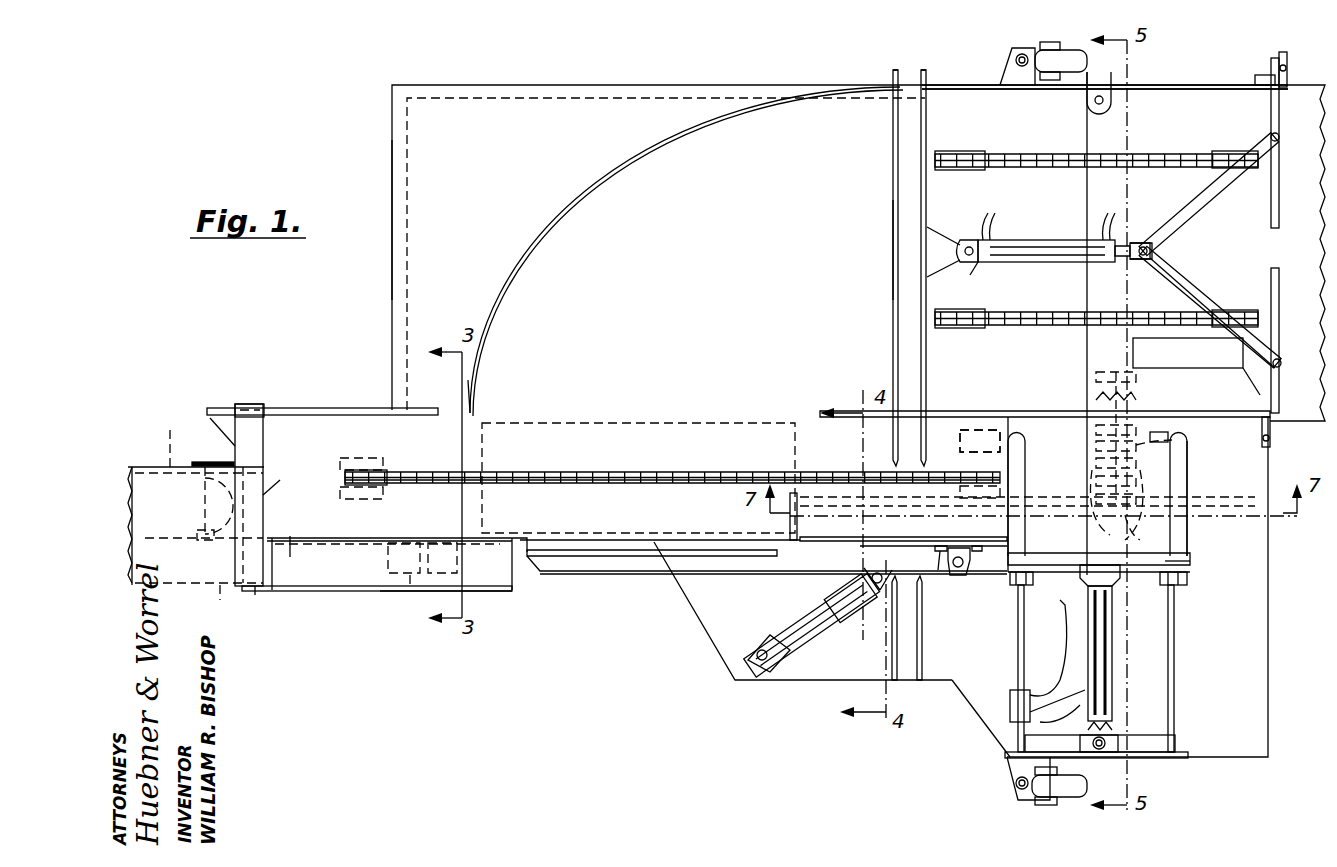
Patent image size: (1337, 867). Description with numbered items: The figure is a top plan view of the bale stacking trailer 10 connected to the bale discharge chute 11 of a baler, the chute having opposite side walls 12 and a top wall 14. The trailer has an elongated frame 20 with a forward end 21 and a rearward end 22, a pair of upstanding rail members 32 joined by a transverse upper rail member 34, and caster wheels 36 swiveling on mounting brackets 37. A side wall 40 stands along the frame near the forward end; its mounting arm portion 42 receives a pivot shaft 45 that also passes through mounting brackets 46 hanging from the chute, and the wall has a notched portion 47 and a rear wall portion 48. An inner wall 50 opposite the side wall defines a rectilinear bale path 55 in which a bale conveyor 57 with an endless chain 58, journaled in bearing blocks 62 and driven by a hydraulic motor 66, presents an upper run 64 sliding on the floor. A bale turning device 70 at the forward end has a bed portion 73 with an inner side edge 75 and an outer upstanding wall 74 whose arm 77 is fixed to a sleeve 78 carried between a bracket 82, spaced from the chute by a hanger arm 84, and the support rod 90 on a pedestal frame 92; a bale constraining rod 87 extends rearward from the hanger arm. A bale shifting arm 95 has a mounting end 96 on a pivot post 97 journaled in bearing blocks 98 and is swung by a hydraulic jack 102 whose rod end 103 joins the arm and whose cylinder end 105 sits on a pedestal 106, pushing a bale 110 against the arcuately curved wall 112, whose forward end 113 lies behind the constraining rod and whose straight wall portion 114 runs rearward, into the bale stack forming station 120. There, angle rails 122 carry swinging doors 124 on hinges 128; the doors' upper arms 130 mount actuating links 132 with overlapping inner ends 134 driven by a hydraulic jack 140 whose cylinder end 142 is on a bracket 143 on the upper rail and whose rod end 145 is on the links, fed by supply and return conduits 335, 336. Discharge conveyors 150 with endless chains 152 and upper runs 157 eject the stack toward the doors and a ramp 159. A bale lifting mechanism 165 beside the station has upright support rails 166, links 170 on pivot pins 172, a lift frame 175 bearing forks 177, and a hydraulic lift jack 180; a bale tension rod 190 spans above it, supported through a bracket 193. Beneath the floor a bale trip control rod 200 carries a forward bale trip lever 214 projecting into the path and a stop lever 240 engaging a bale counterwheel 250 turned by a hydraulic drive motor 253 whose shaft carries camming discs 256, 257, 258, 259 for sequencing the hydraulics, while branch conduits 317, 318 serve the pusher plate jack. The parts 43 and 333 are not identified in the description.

The bale stacking trailer 10 is at (788, 82).
The elongated frame 20 is at (678, 82).
The forward end 21 is at (392, 265).
The bale constraining rod 87 is at (320, 410).
The bracket 82 is at (248, 404).
The arcuately curved wall 112 is at (555, 226).
The forward end of curved wall 113 is at (478, 402).
The top wall 14 is at (180, 522).
The bale discharge chute 11 is at (150, 467).
The side walls 12 is at (212, 600).
The hanger arm 84 is at (264, 440).
The brace 43 is at (220, 462).
The mounting brackets 46 is at (222, 502).
The pivot shaft 45 is at (200, 488).
The mounting arm portion 42 is at (237, 548).
The sleeve 78 is at (264, 490).
The bearing blocks 62 is at (340, 462).
The bed portion 73 is at (299, 530).
The inner side edge 75 is at (320, 538).
The pedestal frame 92 is at (388, 548).
The side wall 40 is at (358, 540).
The outer upstanding wall 74 is at (318, 591).
The forwardly extended arm 77 is at (257, 595).
The bale turning device 70 is at (360, 594).
The support rod 90 is at (408, 589).
The bale conveyor 57 is at (550, 469).
The endless chain 58 is at (700, 472).
The rectilinear bale path 55 is at (672, 446).
The bale 110 is at (600, 423).
The upper run 64 is at (605, 484).
The forward bale trip lever 214 is at (792, 493).
The bale shifting arm 95 is at (627, 560).
The notched portion 47 is at (527, 556).
The rear wall portion 48 is at (830, 548).
The pedestal 106 is at (725, 662).
The hydraulic jack 102 is at (805, 625).
The cylinder end 105 is at (772, 655).
The rod end 103 is at (878, 590).
The inner wall 50 is at (856, 410).
The upstanding rail members 32 is at (903, 70).
The upper rail member 34 is at (893, 255).
The straight wall portion 114 is at (1158, 85).
The ramp 159 is at (1325, 189).
The swinging doors 124 is at (1280, 270).
The upper arms 130 is at (1280, 138).
The overlapping inner ends 134 is at (1163, 240).
The actuating links 132 is at (1220, 290).
The hydraulic door closing jack 140 is at (1035, 240).
The bracket 143 is at (938, 240).
The rod end 145 is at (1125, 262).
The cylinder end 142 is at (982, 264).
The bale stack forming station 120 is at (1010, 228).
The supply conduit 335 is at (1020, 240).
The return conduit 336 is at (1110, 215).
The bale stack ejecting discharge conveyors 150 is at (978, 154).
The upper runs 157 is at (935, 160).
The endless chain 152 is at (1175, 154).
The bale tension rod 190 is at (1150, 385).
The plate 333 is at (1249, 387).
The mounting brackets 37 is at (1010, 75).
The caster wheels 36 is at (1082, 50).
The angle rails 122 is at (1262, 75).
The hinges 128 is at (1288, 68).
The hydraulic drive motor 253 is at (1094, 378).
The camming disc 259 is at (1094, 404).
The hydraulic motor 66 is at (985, 430).
The camming disc 256 is at (1092, 488).
The camming disc 257 is at (1155, 468).
The camming disc 258 is at (1180, 438).
The forks 177 is at (1025, 442).
The bale trip control rod 200 is at (1118, 500).
The bale counterwheel 250 is at (1148, 531).
The stop lever 240 is at (1187, 533).
The lift frame 175 is at (1180, 562).
The bale lifting mechanism 165 is at (1190, 578).
The rearward end 22 is at (1268, 590).
The links 170 is at (1018, 640).
The hydraulic lift jack 180 is at (1102, 642).
The branch conduit 317 is at (1050, 600).
The branch conduit 318 is at (1085, 690).
The bracket 193 is at (1105, 737).
The pivot pins 172 is at (1025, 740).
The upright support rails 166 is at (1005, 750).
The bearing blocks 98 is at (970, 562).
The pivot post 97 is at (962, 568).
The mounting end 96 is at (940, 572).